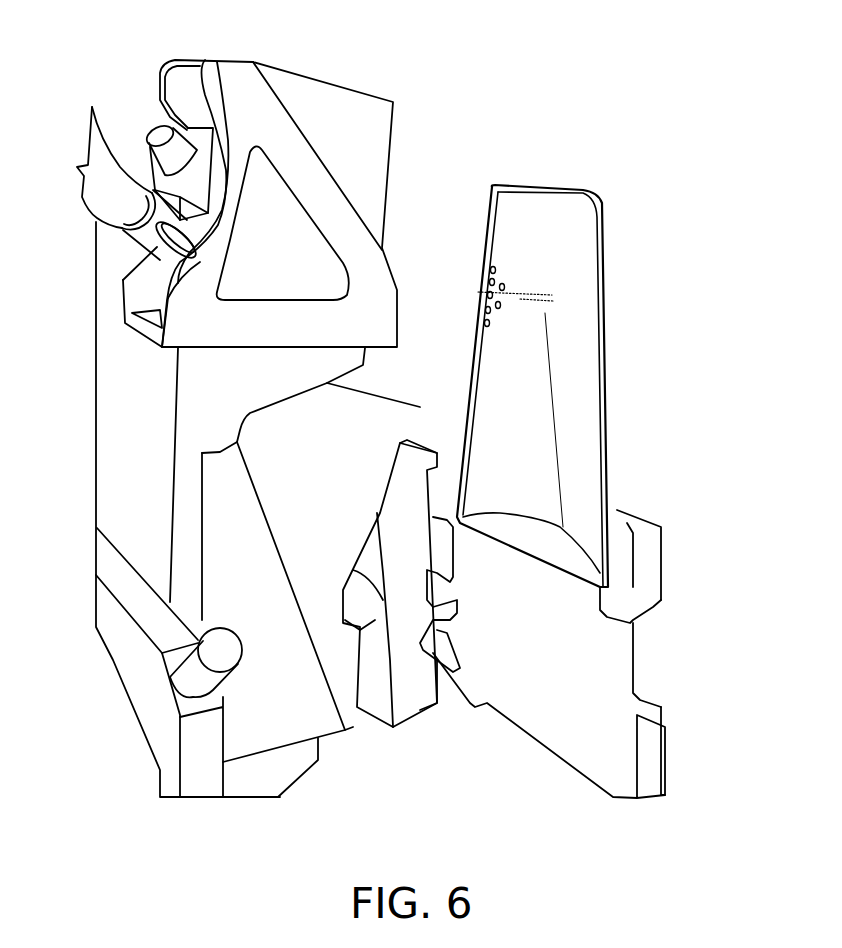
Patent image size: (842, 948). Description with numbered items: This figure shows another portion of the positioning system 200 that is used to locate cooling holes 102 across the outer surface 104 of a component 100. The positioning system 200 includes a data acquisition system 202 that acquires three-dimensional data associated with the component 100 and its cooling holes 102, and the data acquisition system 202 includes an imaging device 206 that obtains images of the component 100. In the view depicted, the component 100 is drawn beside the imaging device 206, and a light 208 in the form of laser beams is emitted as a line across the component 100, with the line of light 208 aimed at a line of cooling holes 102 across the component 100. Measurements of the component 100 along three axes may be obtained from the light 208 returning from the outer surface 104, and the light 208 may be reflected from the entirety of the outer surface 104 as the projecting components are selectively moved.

The positioning system 200 is at (620, 98).
The data acquisition system 202 is at (150, 413).
The imaging device 206 is at (350, 128).
The component 100 is at (588, 400).
The cooling holes 102 is at (487, 275).
The outer surface 104 is at (570, 340).
The light 208 is at (530, 290).